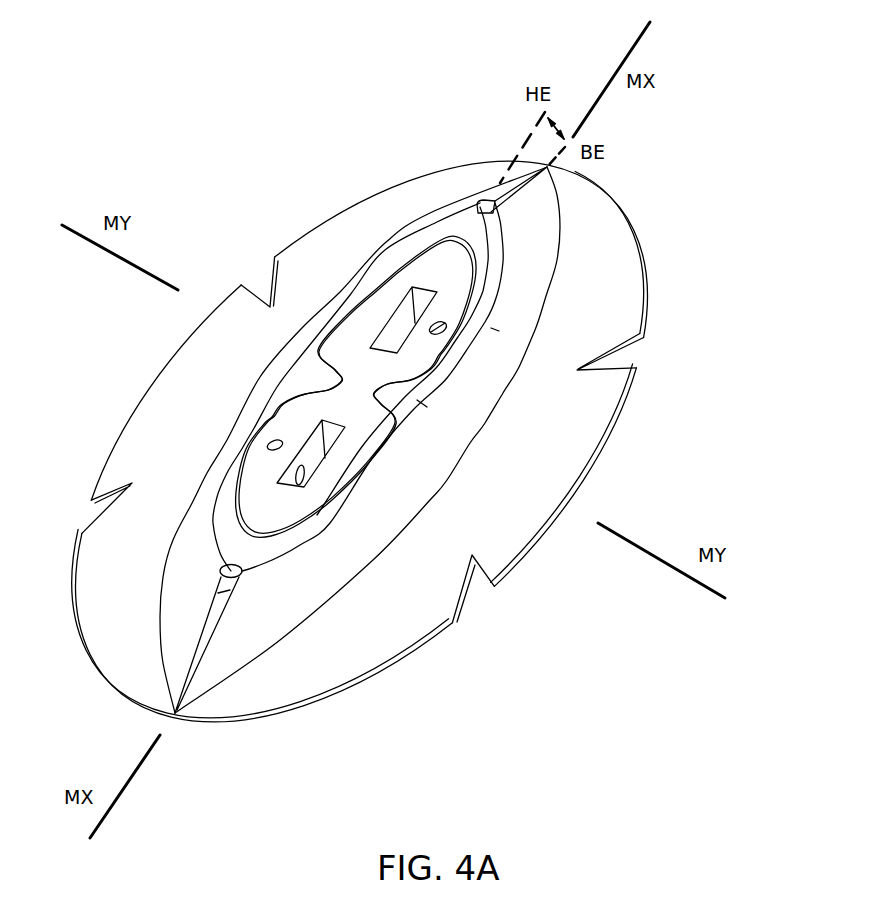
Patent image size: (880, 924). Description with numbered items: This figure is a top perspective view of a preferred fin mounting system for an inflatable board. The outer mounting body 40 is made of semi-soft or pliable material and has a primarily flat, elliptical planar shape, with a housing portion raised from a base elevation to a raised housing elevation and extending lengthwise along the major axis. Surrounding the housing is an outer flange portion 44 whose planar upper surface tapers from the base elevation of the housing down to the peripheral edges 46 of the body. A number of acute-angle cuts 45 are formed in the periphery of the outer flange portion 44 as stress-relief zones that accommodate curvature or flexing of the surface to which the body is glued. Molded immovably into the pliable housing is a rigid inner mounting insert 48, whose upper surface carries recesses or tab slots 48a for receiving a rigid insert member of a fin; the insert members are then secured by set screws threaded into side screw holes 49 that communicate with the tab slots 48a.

The outer mounting body 40 is at (679, 277).
The outer flange portion 44 is at (428, 580).
The acute-angle cuts 45 is at (630, 347).
The peripheral edges 46 is at (618, 420).
The inner mounting insert 48 is at (288, 425).
The tab slots 48a is at (397, 327).
The side screw holes 49 is at (271, 450).